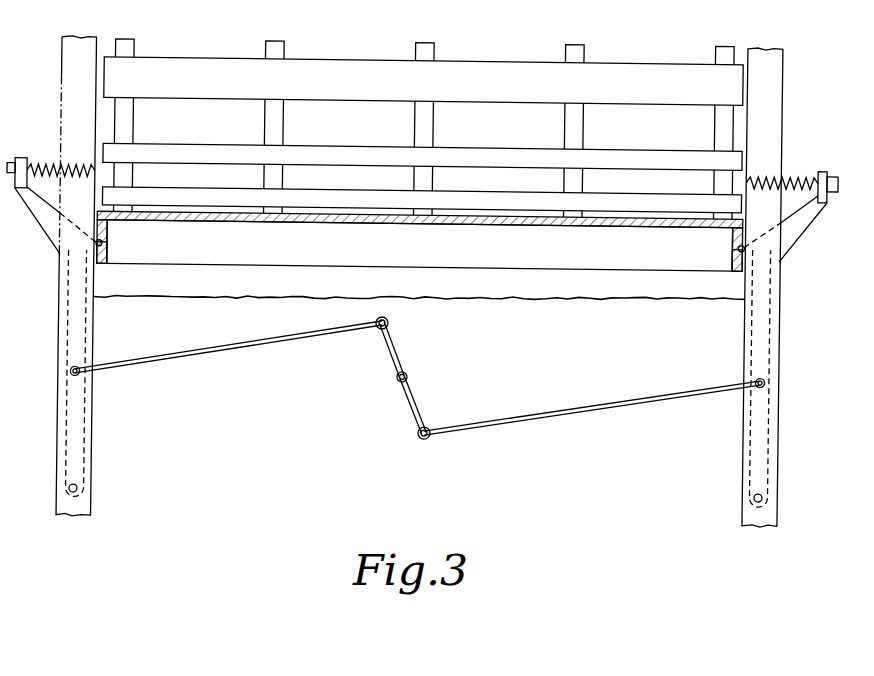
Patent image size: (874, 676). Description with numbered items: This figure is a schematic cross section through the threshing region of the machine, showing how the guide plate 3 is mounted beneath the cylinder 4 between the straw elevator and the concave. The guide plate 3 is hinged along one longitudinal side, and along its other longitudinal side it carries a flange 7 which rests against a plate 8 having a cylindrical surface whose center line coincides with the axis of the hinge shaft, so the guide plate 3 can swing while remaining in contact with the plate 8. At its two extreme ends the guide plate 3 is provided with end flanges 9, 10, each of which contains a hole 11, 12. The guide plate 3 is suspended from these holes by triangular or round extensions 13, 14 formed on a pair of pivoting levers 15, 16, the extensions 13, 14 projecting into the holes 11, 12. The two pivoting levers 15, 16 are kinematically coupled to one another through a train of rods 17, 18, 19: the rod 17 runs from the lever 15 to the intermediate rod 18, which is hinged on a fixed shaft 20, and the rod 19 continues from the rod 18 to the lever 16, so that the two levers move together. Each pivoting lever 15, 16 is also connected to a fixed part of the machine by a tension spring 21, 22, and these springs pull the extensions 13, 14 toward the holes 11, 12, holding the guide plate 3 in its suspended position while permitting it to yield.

The guide plate 3 is at (451, 222).
The cylinder 4 is at (492, 64).
The flange 7 is at (313, 267).
The plate 8 is at (586, 299).
The flange 9 is at (108, 261).
The flange 10 is at (732, 262).
The hole 11 is at (108, 248).
The hole 12 is at (733, 246).
The extension 13 is at (94, 247).
The extension 14 is at (744, 241).
The pivoting lever 15 is at (46, 240).
The pivoting lever 16 is at (796, 232).
The rod 17 is at (239, 348).
The rod 18 is at (401, 350).
The rod 19 is at (590, 405).
The fixed shaft 20 is at (410, 378).
The tension spring 21 is at (46, 169).
The tension spring 22 is at (796, 172).